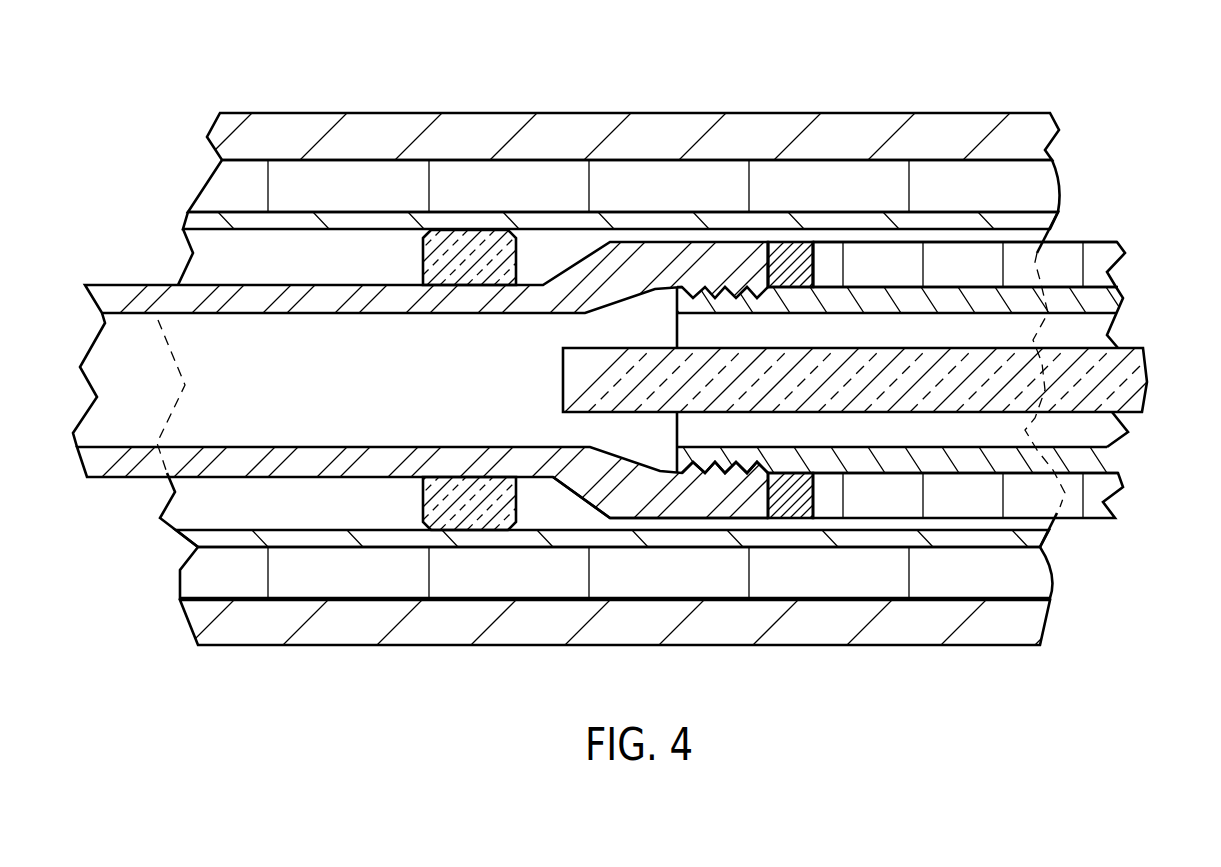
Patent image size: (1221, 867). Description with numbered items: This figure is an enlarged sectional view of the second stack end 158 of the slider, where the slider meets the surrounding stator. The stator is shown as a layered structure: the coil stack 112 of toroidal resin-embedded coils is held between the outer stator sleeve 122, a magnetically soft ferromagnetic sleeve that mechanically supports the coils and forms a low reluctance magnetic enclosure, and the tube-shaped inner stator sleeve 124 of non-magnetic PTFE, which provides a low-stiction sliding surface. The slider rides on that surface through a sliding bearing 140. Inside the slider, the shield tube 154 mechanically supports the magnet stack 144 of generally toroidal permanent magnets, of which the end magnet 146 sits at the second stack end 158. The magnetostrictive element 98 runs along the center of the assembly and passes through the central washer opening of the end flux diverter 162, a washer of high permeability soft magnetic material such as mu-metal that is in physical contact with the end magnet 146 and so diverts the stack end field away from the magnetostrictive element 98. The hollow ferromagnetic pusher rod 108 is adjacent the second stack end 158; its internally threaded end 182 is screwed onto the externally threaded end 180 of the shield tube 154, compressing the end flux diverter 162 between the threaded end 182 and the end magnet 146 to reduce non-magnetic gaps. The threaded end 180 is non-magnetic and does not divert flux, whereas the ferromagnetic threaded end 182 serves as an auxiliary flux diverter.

The magnetostrictive element 98 is at (563, 376).
The pusher rod 108 is at (308, 445).
The coil stack 112 is at (210, 183).
The outer stator sleeve 122 is at (218, 115).
The inner stator sleeve 124 is at (188, 217).
The sliding bearing 140 is at (422, 244).
The magnet stack 144 is at (1083, 240).
The end magnet 146 is at (871, 280).
The shield tube 154 is at (1125, 298).
The second stack end 158 is at (800, 258).
The end flux diverter 162 is at (780, 243).
The threaded end 180 is at (733, 450).
The threaded end 182 is at (705, 520).